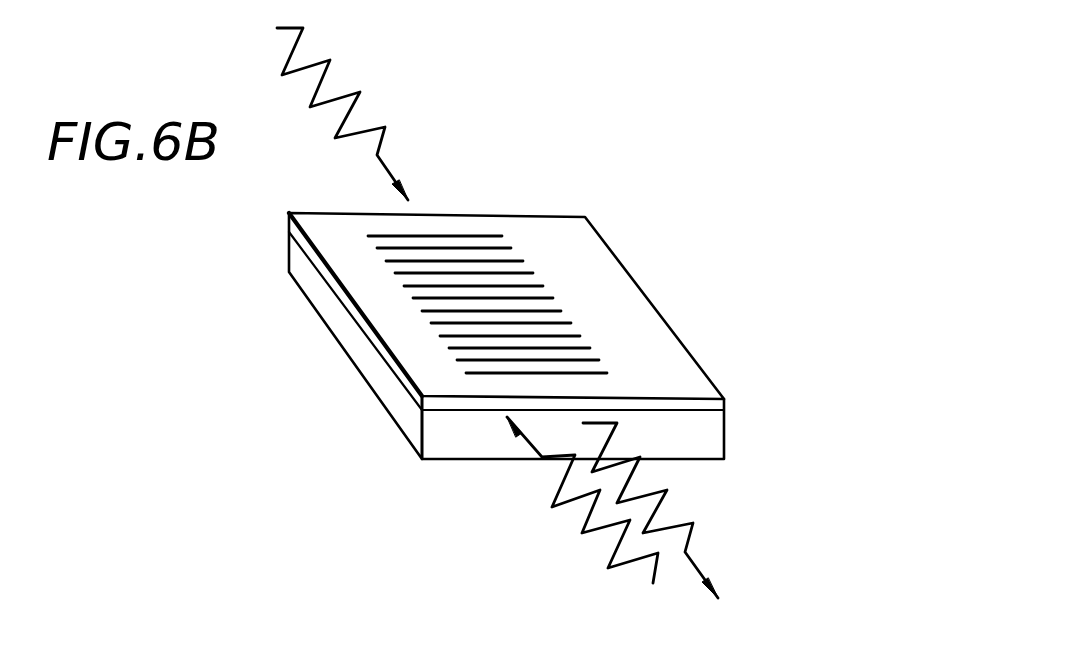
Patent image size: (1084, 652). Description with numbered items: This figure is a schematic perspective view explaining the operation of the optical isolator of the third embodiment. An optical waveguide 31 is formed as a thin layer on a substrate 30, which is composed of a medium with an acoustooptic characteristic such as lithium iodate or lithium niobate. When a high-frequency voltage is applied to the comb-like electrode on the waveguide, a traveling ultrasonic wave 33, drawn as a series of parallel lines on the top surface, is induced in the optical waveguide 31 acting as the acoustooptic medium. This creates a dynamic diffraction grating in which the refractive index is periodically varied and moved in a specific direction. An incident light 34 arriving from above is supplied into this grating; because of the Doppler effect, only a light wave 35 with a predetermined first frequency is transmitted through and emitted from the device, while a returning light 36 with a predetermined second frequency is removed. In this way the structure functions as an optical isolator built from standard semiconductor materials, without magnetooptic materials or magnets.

The substrate 30 is at (703, 445).
The optical waveguide 31 is at (342, 295).
The traveling ultrasonic wave 33 is at (525, 275).
The incident light 34 is at (330, 60).
The light wave 35 is at (695, 533).
The returning light 36 is at (580, 532).